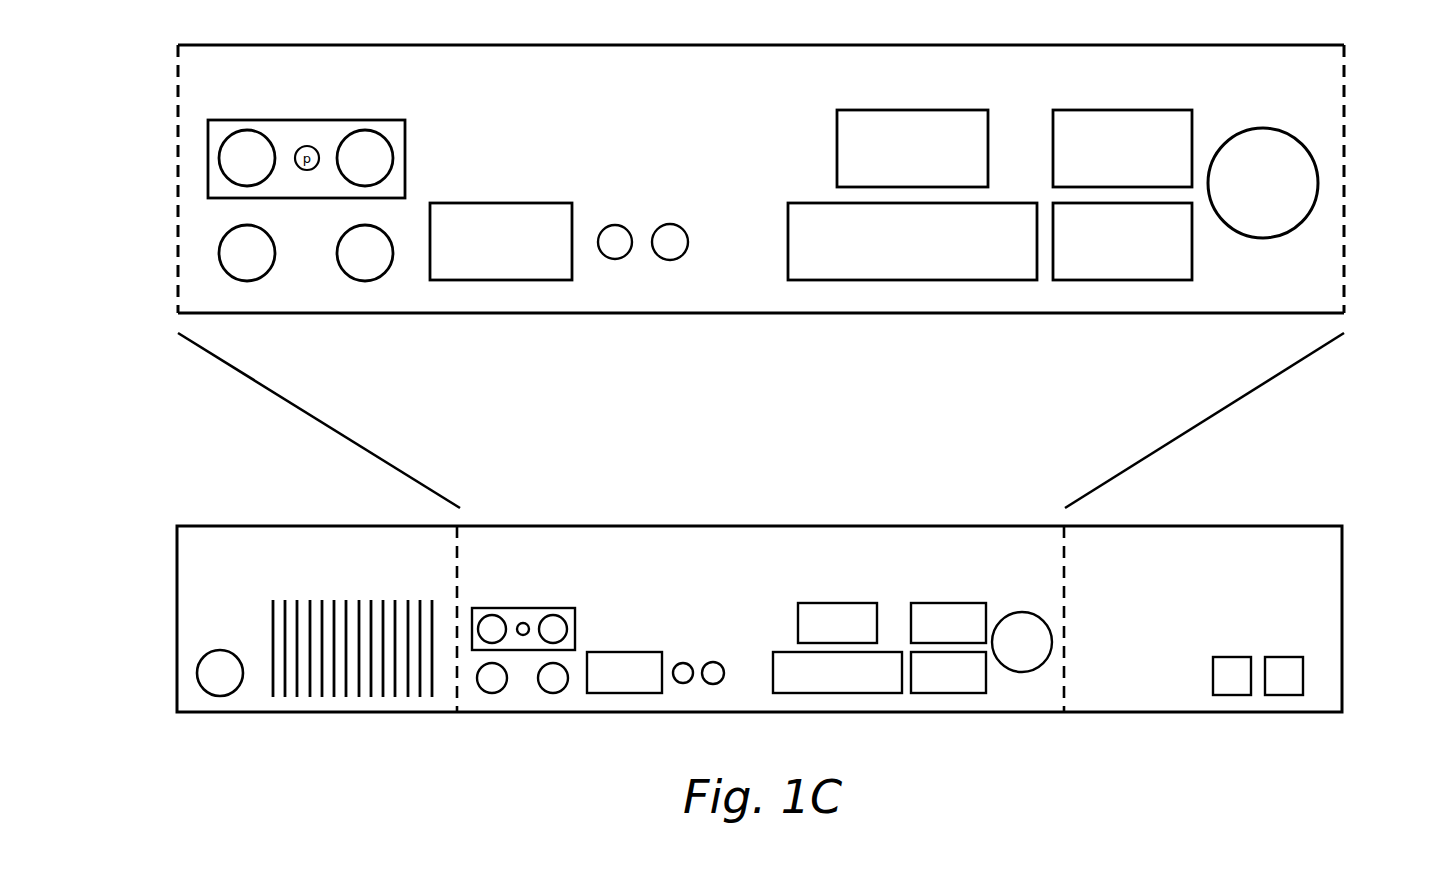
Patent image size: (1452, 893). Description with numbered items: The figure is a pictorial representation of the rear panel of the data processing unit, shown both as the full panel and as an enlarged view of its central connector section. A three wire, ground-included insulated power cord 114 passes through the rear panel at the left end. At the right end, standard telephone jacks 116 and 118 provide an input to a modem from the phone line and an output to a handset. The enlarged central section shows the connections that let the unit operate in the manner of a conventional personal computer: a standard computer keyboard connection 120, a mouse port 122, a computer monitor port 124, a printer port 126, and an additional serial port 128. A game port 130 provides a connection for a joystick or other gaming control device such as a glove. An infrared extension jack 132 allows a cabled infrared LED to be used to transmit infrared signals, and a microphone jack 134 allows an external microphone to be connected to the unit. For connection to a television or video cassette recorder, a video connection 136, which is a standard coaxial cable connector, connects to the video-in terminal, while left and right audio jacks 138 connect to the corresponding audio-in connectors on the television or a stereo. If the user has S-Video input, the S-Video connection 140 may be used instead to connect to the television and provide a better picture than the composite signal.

The power cord 114 is at (197, 676).
The telephone jack 116 is at (1233, 657).
The telephone jack 118 is at (1289, 657).
The computer keyboard connection 120 is at (1320, 183).
The mouse port 122 is at (1155, 110).
The computer monitor port 124 is at (952, 110).
The printer port 126 is at (842, 280).
The additional serial port 128 is at (1108, 280).
The game port 130 is at (535, 203).
The infrared extension jack 132 is at (613, 225).
The microphone jack 134 is at (689, 247).
The video connection 136 is at (393, 160).
The left and right audio jacks 138 is at (221, 184).
The S-Video connection 140 is at (338, 235).